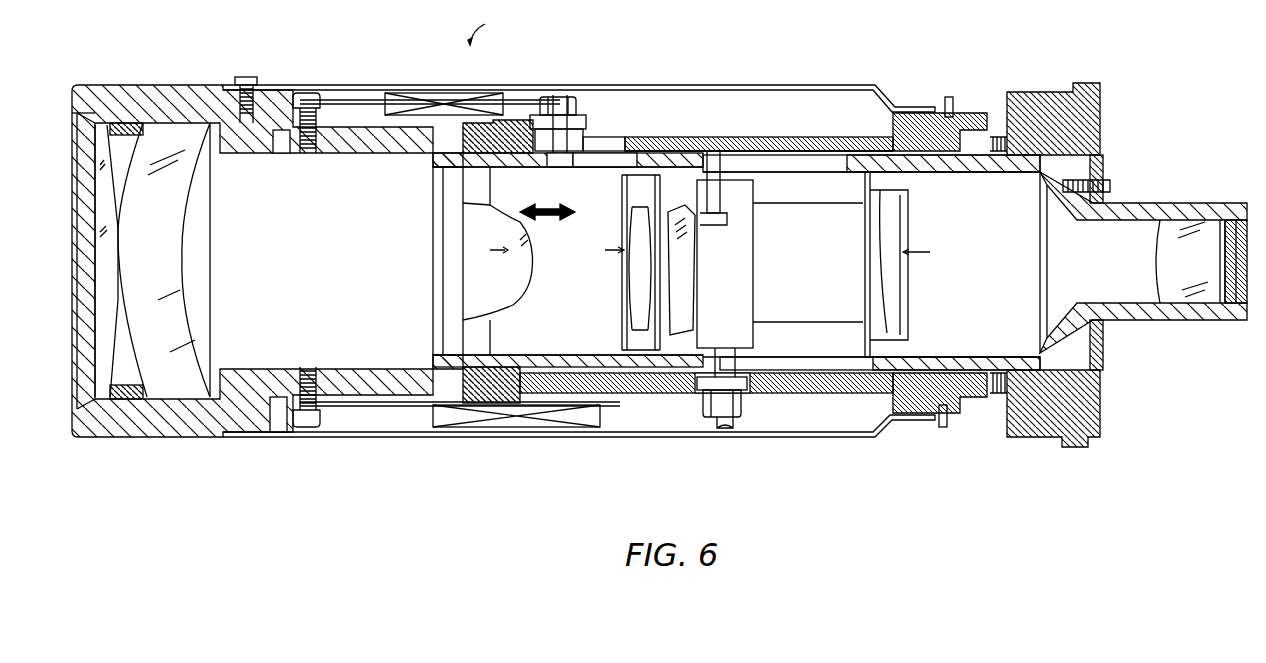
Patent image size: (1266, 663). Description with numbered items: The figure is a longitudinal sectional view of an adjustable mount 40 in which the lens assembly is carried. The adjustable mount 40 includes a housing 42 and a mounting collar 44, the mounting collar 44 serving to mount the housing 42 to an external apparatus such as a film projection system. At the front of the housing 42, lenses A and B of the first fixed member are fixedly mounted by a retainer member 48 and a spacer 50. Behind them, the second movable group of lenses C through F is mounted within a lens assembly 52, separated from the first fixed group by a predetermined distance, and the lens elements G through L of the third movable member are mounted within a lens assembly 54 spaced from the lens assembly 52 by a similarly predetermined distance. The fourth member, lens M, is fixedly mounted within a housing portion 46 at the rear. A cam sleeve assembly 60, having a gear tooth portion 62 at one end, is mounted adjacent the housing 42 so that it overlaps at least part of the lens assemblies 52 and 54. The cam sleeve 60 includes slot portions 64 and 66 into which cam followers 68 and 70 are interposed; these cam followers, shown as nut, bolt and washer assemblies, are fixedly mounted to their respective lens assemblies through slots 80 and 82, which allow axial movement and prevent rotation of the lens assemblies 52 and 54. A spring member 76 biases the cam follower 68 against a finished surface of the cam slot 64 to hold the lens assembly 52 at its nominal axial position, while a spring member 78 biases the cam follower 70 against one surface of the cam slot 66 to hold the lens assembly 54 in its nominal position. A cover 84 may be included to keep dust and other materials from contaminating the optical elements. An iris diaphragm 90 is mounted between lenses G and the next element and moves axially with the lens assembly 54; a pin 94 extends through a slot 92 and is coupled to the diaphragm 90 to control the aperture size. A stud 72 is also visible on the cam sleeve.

The adjustable mount 40 is at (491, 27).
The housing 42 is at (190, 437).
The mounting collar 44 is at (1025, 92).
The housing portion 46 is at (1190, 320).
The retainer member 48 is at (108, 437).
The spacer 50 is at (128, 123).
The lens assembly 52 is at (578, 352).
The lens assembly 54 is at (785, 207).
The cam sleeve assembly 60 is at (690, 137).
The gear tooth portion 62 is at (952, 97).
The slot portion 64 is at (608, 138).
The slot portion 66 is at (748, 385).
The cam follower 68 is at (582, 108).
The cam follower 70 is at (735, 430).
The stud 72 is at (948, 427).
The spring member 76 is at (392, 93).
The spring member 78 is at (592, 433).
The slot 80 is at (612, 160).
The slot 82 is at (822, 362).
The cover 84 is at (826, 85).
The iris diaphragm 90 is at (723, 215).
The slot 92 is at (792, 155).
The pin 94 is at (718, 160).
The lens A is at (106, 261).
The lens B is at (164, 260).
The lens C is at (498, 261).
The lens F is at (625, 262).
The lens G is at (681, 270).
The lens L is at (923, 252).
The lens M is at (1201, 261).